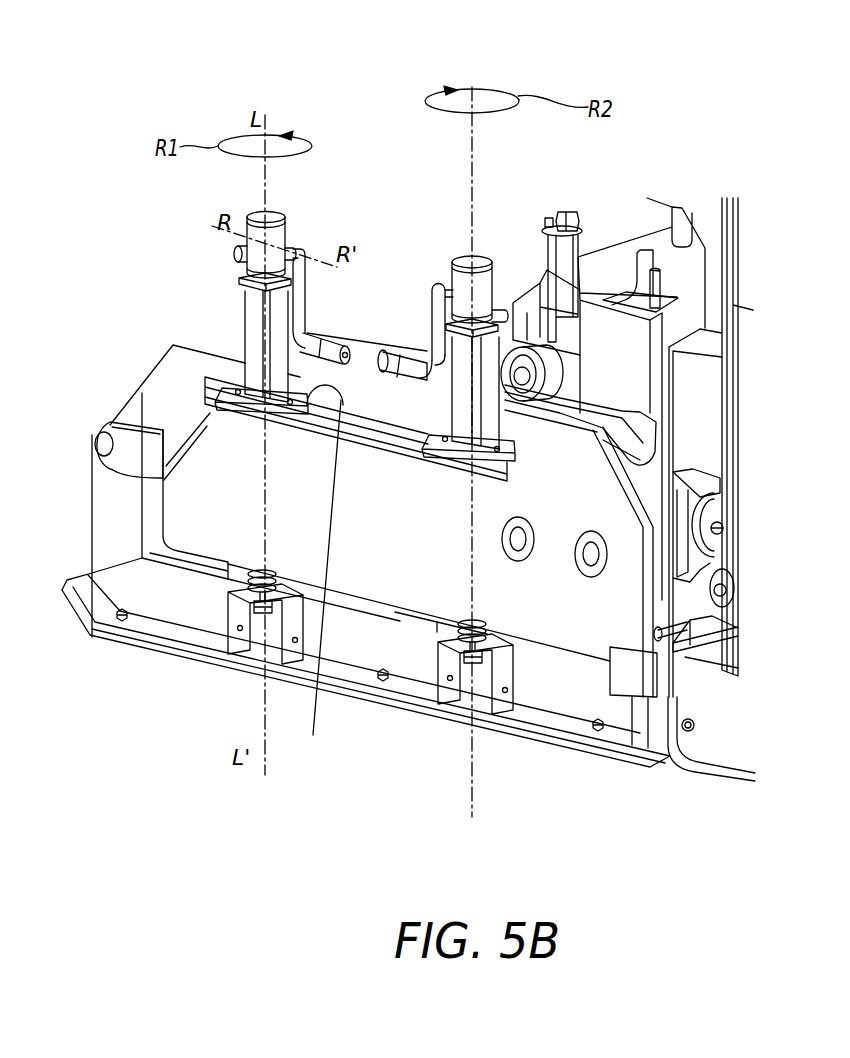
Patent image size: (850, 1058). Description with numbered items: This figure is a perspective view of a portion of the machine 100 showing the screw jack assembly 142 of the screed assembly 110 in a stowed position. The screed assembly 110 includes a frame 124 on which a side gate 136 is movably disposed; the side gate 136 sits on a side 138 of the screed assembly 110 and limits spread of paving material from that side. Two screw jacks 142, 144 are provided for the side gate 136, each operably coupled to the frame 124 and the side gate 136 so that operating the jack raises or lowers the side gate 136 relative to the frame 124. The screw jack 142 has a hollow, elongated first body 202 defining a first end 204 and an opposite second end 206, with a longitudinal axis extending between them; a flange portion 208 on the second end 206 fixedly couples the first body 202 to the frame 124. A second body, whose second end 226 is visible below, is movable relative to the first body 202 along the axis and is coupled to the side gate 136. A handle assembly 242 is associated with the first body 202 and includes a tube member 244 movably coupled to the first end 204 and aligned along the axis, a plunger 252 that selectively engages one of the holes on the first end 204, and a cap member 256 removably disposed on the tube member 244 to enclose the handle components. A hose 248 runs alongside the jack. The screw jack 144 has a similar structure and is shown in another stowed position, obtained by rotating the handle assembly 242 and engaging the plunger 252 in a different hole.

The machine 100 is at (757, 119).
The screed assembly 110 is at (758, 445).
The frame 124 is at (598, 497).
The side gate 136 is at (360, 650).
The side 138 is at (609, 772).
The screw jack assembly 142 is at (303, 187).
The screw jack assembly 144 is at (501, 252).
The first body 202 is at (252, 332).
The first end 204 is at (227, 277).
The second end 206 is at (212, 384).
The flange portion 208 is at (341, 400).
The second end 226 is at (240, 608).
The handle assembly 242 is at (305, 213).
The tube member 244 is at (252, 217).
The hose 248 is at (308, 295).
The plunger 252 is at (232, 252).
The cap member 256 is at (273, 211).